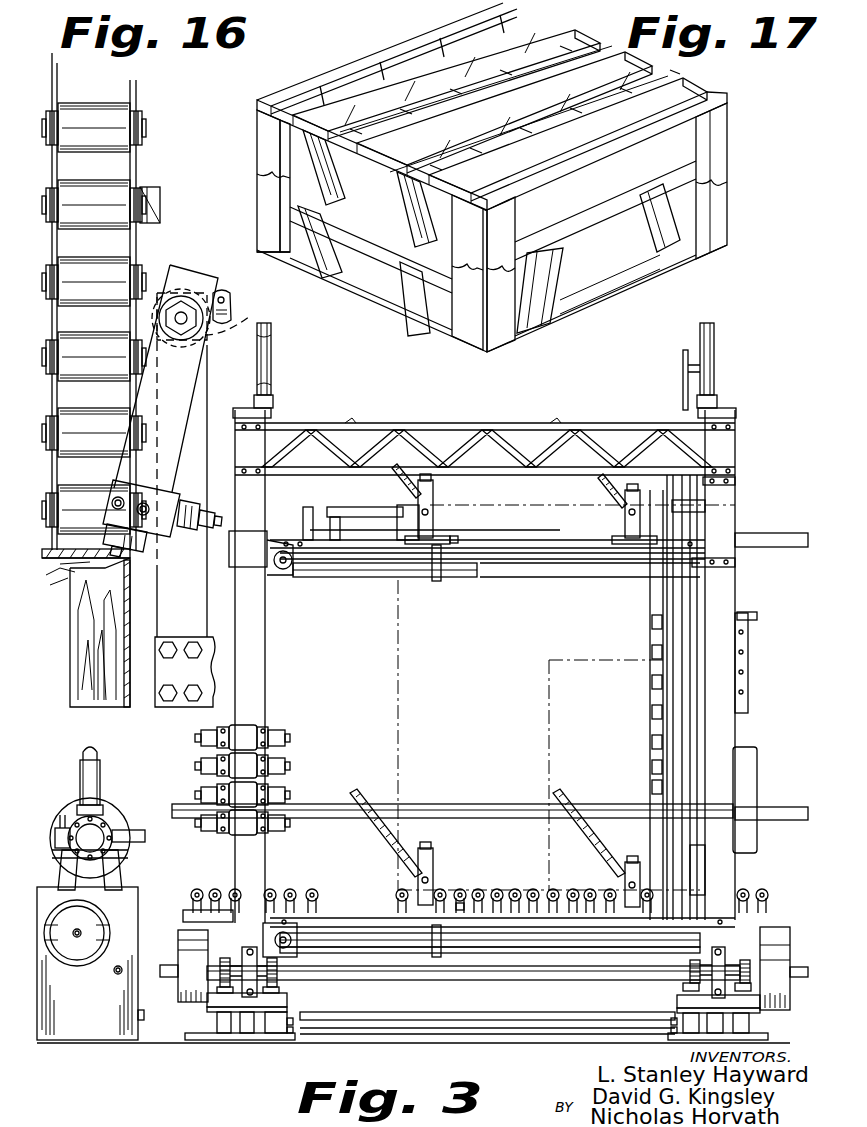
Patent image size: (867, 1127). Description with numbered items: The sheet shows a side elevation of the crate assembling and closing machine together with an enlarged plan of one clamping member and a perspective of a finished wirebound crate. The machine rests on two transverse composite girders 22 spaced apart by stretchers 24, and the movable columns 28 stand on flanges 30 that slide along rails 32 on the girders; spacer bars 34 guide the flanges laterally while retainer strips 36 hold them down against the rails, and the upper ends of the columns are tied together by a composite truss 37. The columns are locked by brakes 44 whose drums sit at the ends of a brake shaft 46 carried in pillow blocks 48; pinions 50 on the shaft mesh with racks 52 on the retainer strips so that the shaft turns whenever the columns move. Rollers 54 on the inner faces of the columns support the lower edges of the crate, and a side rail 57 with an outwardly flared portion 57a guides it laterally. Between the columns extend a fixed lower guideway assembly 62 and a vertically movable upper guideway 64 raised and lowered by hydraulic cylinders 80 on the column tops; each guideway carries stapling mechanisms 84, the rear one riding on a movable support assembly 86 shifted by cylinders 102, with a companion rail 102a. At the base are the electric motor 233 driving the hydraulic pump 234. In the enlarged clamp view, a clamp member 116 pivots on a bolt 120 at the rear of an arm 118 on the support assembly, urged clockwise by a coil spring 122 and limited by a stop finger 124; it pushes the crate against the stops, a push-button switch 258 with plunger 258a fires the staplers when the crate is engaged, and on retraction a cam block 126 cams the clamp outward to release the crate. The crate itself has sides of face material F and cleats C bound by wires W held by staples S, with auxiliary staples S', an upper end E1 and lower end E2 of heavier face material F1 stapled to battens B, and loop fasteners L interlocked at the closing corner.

In FIG. 3, the composite girder 22 is at (672, 1040).
In FIG. 3, the stretcher 24 is at (418, 1030).
In FIG. 3, the movable column 28 is at (735, 601).
In FIG. 3, the flange 30 is at (745, 1012).
In FIG. 3, the rail 32 is at (675, 1023).
In FIG. 3, the spacer bar 34 is at (677, 1010).
In FIG. 3, the retainer strip 36 is at (760, 1000).
In FIG. 3, the composite truss 37 is at (444, 420).
In FIG. 3, the brake 44 is at (788, 1008).
In FIG. 3, the brake shaft 46 is at (447, 980).
In FIG. 3, the pillow block 48 is at (715, 948).
In FIG. 3, the pinion 50 is at (752, 962).
In FIG. 3, the rack 52 is at (752, 985).
In FIG. 3, the roller 54 is at (770, 896).
In FIG. 3, the side rail 57 is at (436, 805).
In FIG. 3, the outwardly flared portion 57a is at (770, 807).
In FIG. 3, the lower guideway assembly 62 is at (338, 940).
In FIG. 3, the upper guideway 64 is at (512, 554).
In FIG. 3, the hydraulic cylinder 80 is at (716, 345).
In FIG. 3, the stapling mechanism 84 is at (642, 860).
In FIG. 3, the support assembly 86 is at (460, 903).
In FIG. 3, the cylinder 102 is at (478, 948).
In FIG. 3, the side rail 102a is at (565, 948).
In FIG. 16, the clamp member 116 is at (200, 360).
In FIG. 16, the arm 118 is at (206, 389).
In FIG. 16, the bolt 120 is at (190, 293).
In FIG. 16, the coil spring 122 is at (248, 317).
In FIG. 16, the stop finger 124 is at (231, 296).
In FIG. 16, the cam block 126 is at (156, 194).
In FIG. 3, the electric motor 233 is at (112, 822).
In FIG. 3, the hydraulic pump 234 is at (75, 822).
In FIG. 16, the push-button switch 258 is at (149, 483).
In FIG. 16, the plunger 258a is at (128, 549).
In FIG. 17, the upper end section E1 is at (390, 44).
In FIG. 17, the lower end section E2 is at (590, 287).
In FIG. 17, the face material F is at (262, 206).
In FIG. 17, the heavier face material F1 is at (345, 232).
In FIG. 17, the batten B is at (350, 272).
In FIG. 17, the staple S is at (272, 79).
In FIG. 17, the stringer block S' is at (390, 203).
In FIG. 17, the binding wire W is at (264, 118).
In FIG. 17, the cleat C is at (390, 298).
In FIG. 17, the loop fastener L is at (487, 345).